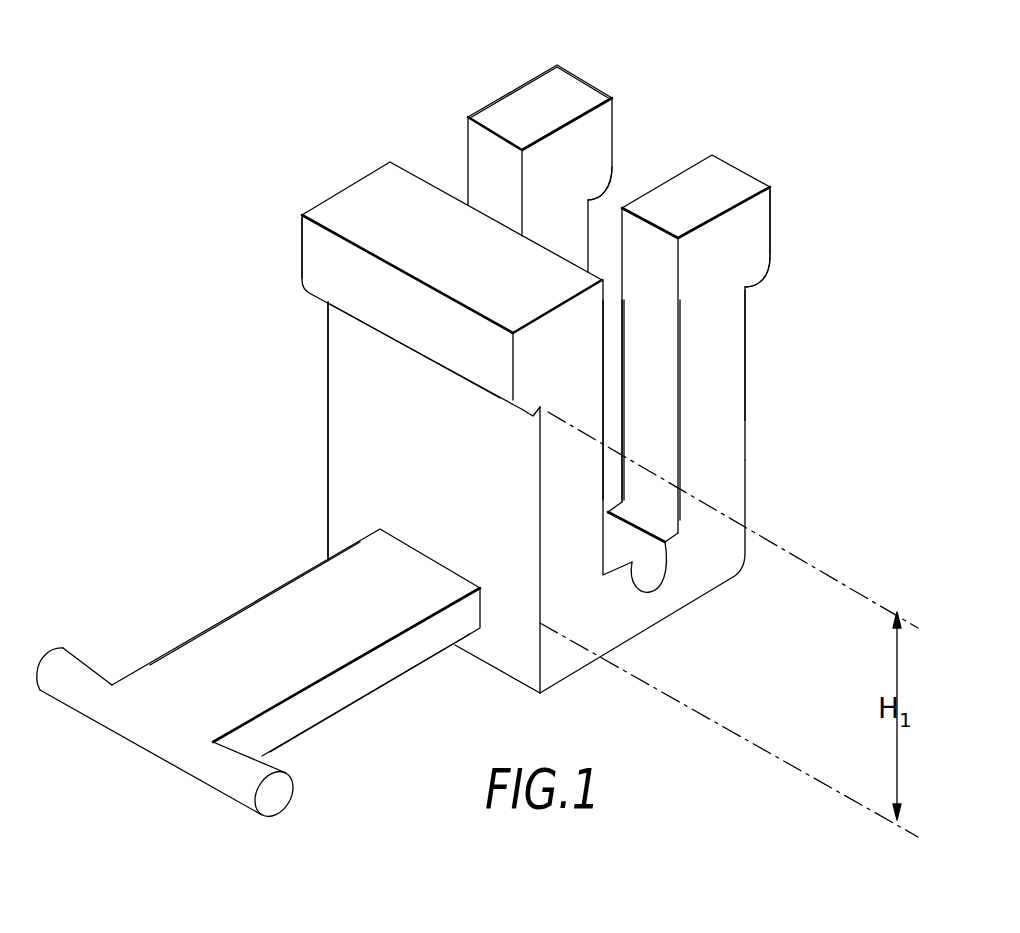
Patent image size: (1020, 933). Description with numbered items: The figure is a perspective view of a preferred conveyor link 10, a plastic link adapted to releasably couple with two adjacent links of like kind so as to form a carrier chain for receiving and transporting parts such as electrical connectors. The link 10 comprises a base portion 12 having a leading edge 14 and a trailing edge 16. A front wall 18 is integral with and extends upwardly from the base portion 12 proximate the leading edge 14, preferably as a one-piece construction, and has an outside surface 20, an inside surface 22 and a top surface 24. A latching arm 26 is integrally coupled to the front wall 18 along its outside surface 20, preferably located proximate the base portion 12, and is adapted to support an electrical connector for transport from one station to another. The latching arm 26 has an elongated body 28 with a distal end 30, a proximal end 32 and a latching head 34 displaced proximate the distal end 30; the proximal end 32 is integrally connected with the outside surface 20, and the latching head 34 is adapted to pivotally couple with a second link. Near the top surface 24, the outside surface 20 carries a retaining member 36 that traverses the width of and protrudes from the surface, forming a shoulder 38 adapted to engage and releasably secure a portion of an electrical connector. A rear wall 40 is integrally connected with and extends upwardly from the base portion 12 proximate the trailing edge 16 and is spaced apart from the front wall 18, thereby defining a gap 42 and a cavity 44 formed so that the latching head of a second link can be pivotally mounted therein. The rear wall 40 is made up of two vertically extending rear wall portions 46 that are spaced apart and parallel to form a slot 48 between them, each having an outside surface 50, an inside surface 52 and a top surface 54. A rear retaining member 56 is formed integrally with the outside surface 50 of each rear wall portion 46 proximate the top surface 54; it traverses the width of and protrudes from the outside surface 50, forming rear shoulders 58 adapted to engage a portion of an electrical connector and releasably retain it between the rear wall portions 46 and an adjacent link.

The conveyor link 10 is at (195, 265).
The base portion 12 is at (660, 528).
The leading edge 14 is at (530, 607).
The trailing edge 16 is at (747, 505).
The front wall 18 is at (338, 440).
The outside surface 20 is at (322, 336).
The inside surface 22 is at (607, 413).
The top surface 24 is at (371, 192).
The latching arm 26 is at (220, 643).
The elongated body 28 is at (318, 705).
The distal end 30 is at (150, 681).
The proximal end 32 is at (355, 575).
The latching head 34 is at (248, 778).
The retaining member 36 is at (310, 240).
The shoulder 38 is at (398, 347).
The rear wall 40 is at (722, 400).
The gap 42 is at (450, 152).
The cavity 44 is at (637, 582).
The rear wall portions 46 is at (603, 128).
The slot 48 is at (647, 164).
The outside surface 50 is at (748, 326).
The inside surface 52 is at (655, 437).
The top surface 54 is at (567, 85).
The rear retaining member 56 is at (772, 258).
The rear shoulders 58 is at (763, 280).